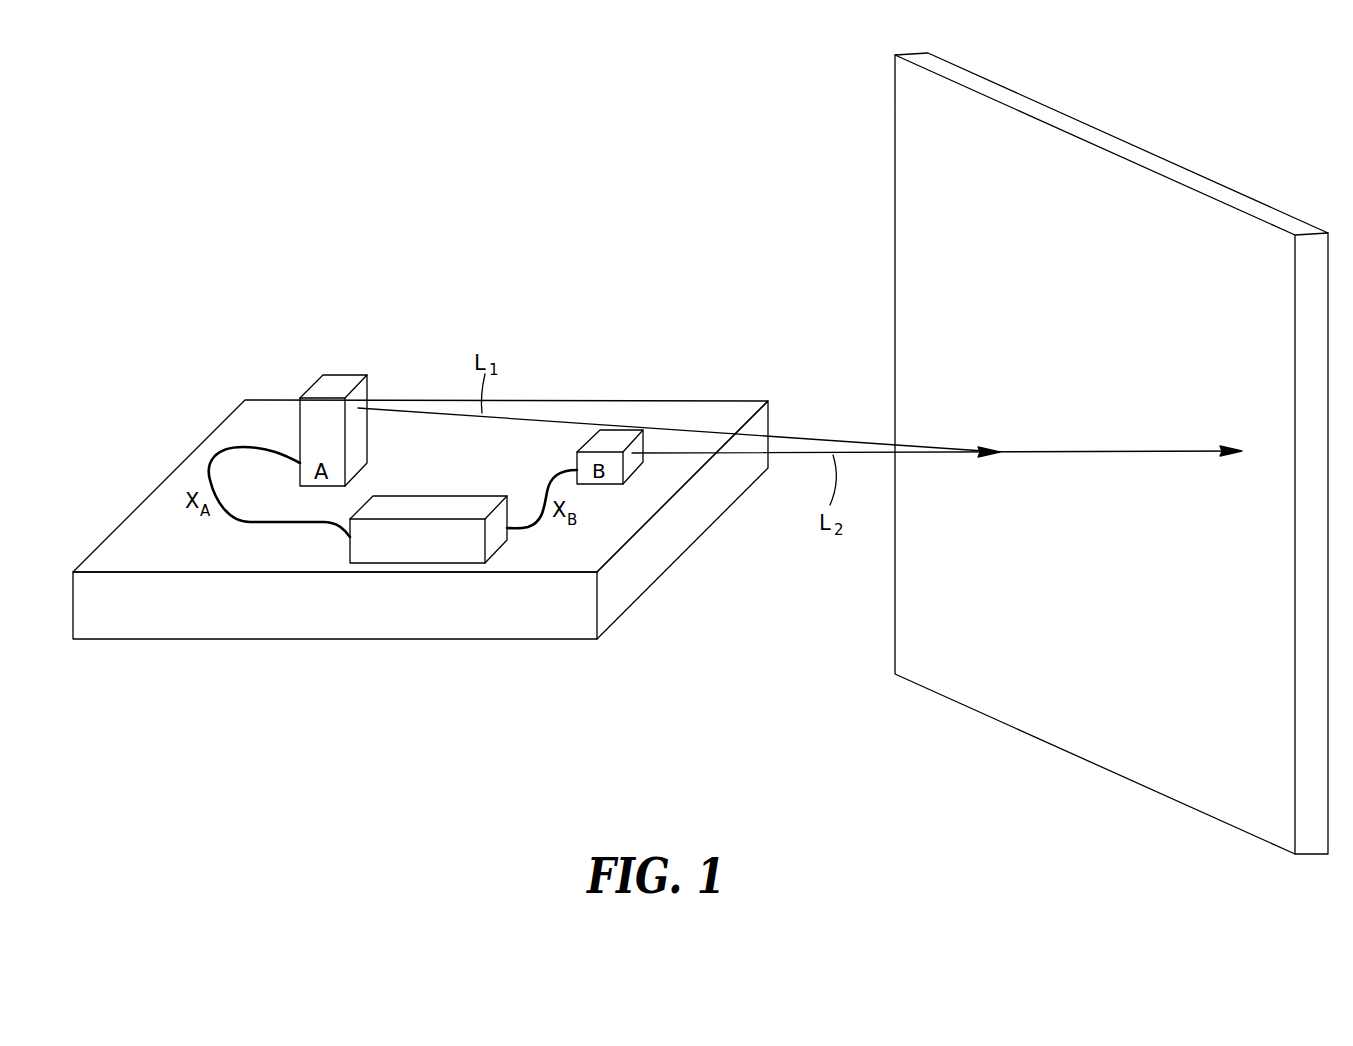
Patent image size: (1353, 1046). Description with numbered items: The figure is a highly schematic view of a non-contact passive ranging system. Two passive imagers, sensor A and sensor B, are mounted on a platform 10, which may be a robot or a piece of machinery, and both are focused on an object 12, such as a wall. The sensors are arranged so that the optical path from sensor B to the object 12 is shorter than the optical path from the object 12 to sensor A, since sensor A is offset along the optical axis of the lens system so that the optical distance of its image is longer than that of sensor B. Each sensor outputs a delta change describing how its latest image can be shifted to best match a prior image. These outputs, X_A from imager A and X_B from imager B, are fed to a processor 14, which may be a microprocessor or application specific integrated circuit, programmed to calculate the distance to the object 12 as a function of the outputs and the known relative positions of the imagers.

The platform 10 is at (699, 415).
The object 12 is at (921, 233).
The processor 14 is at (350, 549).